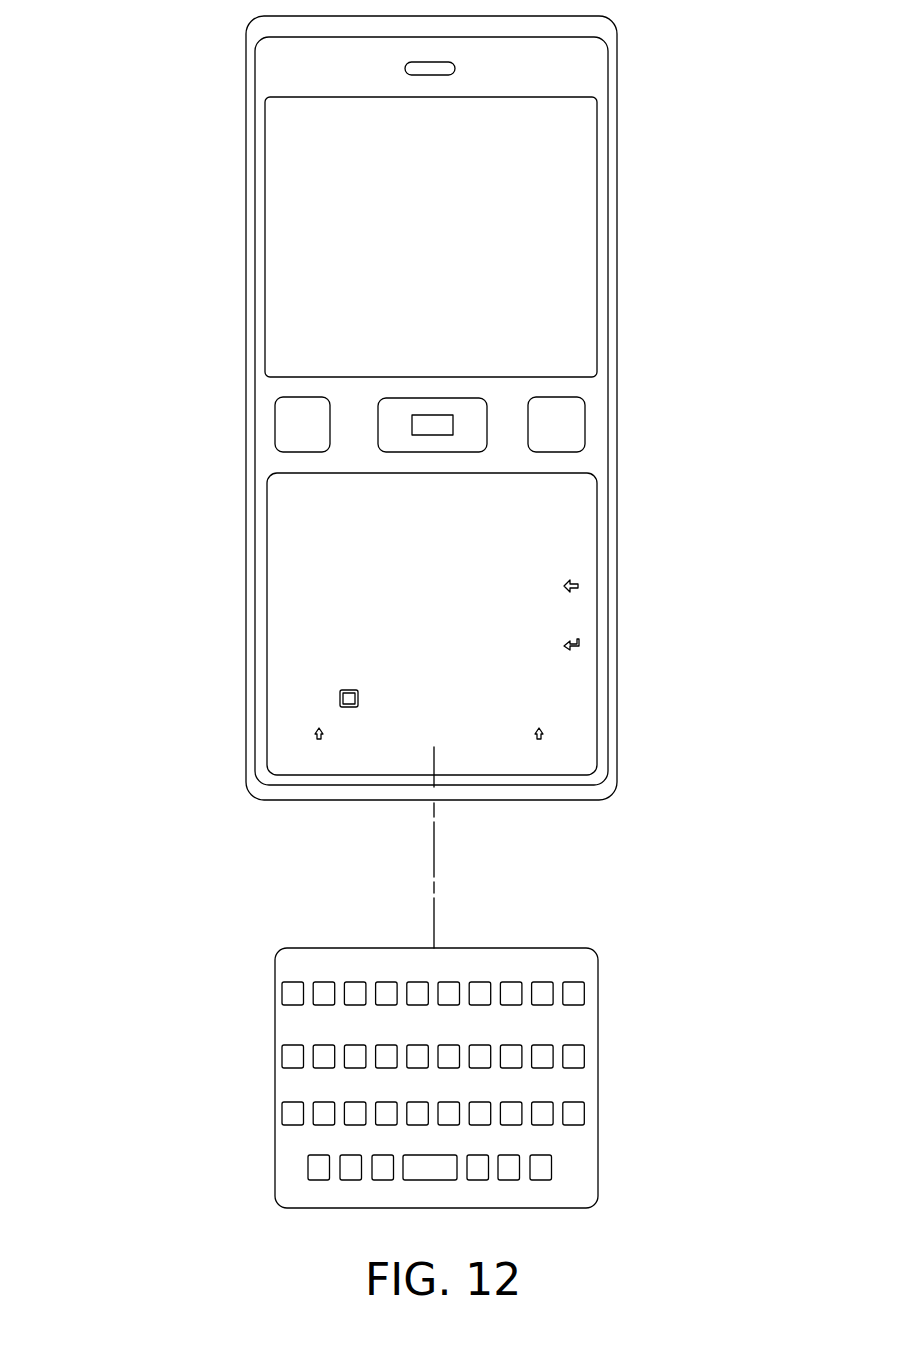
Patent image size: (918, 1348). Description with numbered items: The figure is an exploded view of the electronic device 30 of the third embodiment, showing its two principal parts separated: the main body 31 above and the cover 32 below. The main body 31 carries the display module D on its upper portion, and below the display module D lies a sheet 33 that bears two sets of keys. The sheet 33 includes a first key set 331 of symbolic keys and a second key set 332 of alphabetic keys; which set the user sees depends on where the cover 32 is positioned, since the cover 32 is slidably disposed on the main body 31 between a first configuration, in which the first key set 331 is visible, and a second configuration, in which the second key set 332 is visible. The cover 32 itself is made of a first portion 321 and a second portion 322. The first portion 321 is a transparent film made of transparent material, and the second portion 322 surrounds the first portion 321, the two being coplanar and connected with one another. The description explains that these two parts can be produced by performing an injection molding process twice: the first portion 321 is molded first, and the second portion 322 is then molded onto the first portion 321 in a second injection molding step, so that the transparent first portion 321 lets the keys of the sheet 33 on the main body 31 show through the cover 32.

The electronic device 30 is at (59, 38).
The main body 31 is at (590, 77).
The display module D is at (565, 188).
The sheet 33 is at (435, 624).
The first key set 331 is at (313, 522).
The second key set 332 is at (578, 550).
The cover 32 is at (519, 1078).
The first portion 321 is at (583, 992).
The second portion 322 is at (583, 1022).